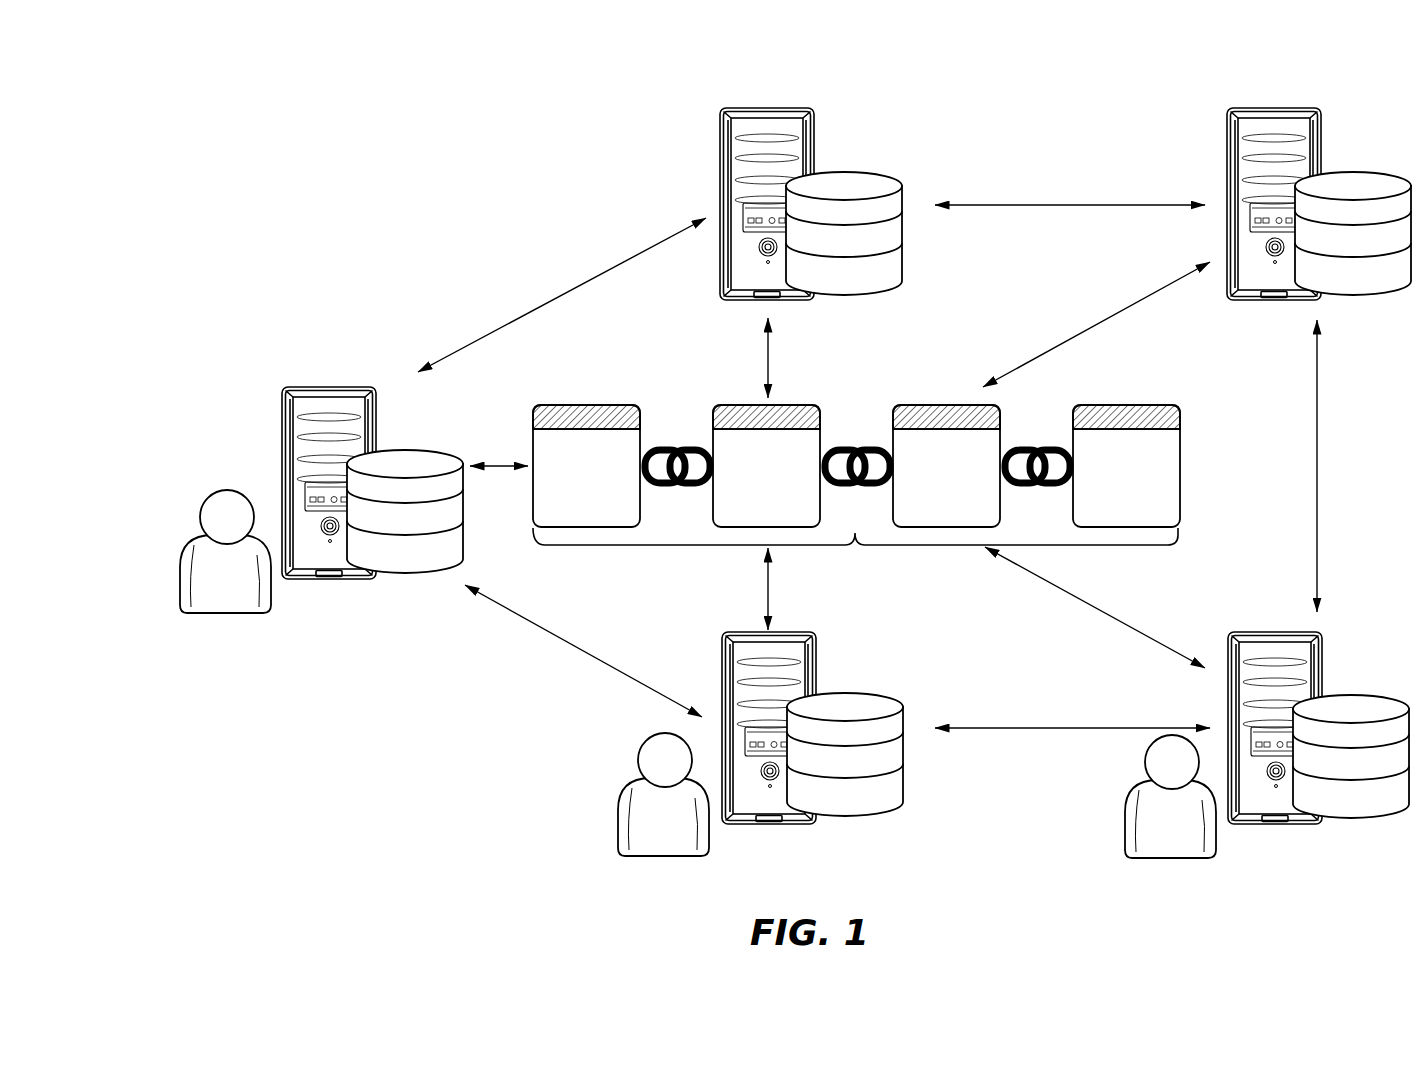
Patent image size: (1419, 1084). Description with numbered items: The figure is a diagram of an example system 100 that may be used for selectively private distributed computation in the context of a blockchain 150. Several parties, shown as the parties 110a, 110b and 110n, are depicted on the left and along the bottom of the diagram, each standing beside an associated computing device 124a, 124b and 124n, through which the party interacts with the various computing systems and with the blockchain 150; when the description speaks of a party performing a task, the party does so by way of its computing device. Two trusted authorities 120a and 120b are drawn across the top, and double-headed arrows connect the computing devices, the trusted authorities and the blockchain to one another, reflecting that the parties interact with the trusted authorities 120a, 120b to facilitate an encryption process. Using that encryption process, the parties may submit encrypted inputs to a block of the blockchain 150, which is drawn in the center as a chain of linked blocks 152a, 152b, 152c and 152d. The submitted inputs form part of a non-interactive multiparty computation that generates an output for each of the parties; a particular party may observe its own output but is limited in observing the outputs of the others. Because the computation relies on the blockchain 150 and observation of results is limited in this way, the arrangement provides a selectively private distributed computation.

The system 100 is at (285, 192).
The party 110a is at (182, 562).
The party 110b is at (620, 803).
The party 110n is at (1127, 802).
The trusted authority 120a is at (750, 108).
The trusted authority 120b is at (1258, 108).
The computing device 124a is at (312, 578).
The computing device 124b is at (748, 824).
The computing device 124n is at (1253, 824).
The blockchain 150 is at (855, 518).
The block 152a is at (572, 405).
The block 152b is at (738, 405).
The block 152c is at (928, 405).
The block 152d is at (1135, 405).